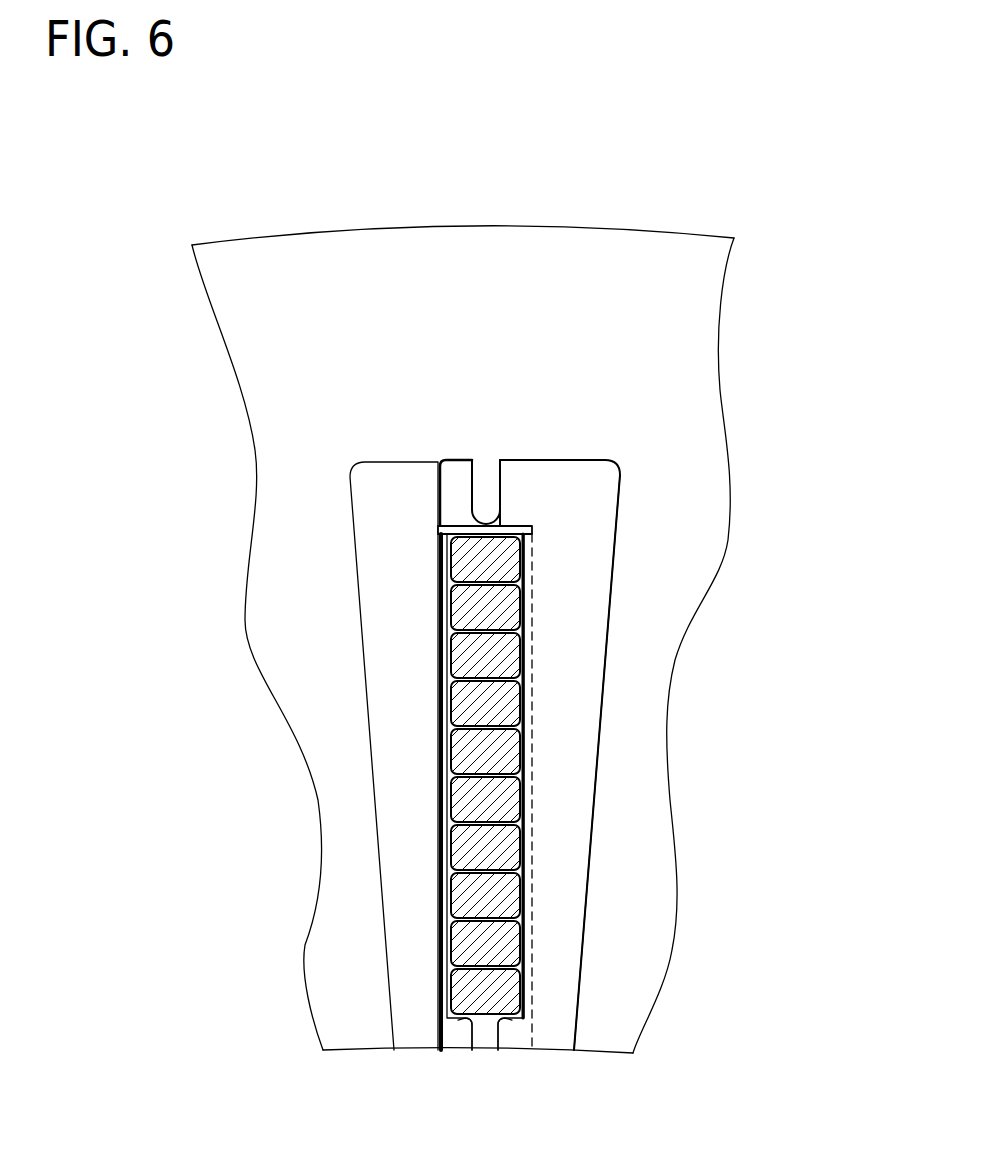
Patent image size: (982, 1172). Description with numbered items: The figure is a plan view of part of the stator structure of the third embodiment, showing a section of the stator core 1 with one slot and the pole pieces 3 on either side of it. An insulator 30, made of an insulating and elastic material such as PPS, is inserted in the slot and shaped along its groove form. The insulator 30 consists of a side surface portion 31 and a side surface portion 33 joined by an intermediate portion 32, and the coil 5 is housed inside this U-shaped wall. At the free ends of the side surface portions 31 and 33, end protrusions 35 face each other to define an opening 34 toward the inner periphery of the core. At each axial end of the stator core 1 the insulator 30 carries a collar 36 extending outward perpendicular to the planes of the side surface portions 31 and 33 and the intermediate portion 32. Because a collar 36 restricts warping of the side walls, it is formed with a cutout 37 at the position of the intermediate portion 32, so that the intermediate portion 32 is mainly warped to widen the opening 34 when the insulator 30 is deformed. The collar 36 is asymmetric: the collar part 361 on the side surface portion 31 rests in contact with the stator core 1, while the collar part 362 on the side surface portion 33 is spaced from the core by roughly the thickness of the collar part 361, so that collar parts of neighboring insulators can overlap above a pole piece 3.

The stator core 1 is at (514, 226).
The pole piece 3 is at (357, 1050).
The coil 5 is at (514, 853).
The insulator 30 is at (577, 447).
The side surface portion 31 is at (440, 782).
The intermediate portion 32 is at (520, 526).
The side surface portion 33 is at (532, 716).
The opening 34 is at (484, 1037).
The end protrusion 35 is at (457, 1040).
The collar 36 is at (612, 478).
The collar part 361 is at (370, 562).
The collar part 362 is at (592, 643).
The cutout 37 is at (476, 482).